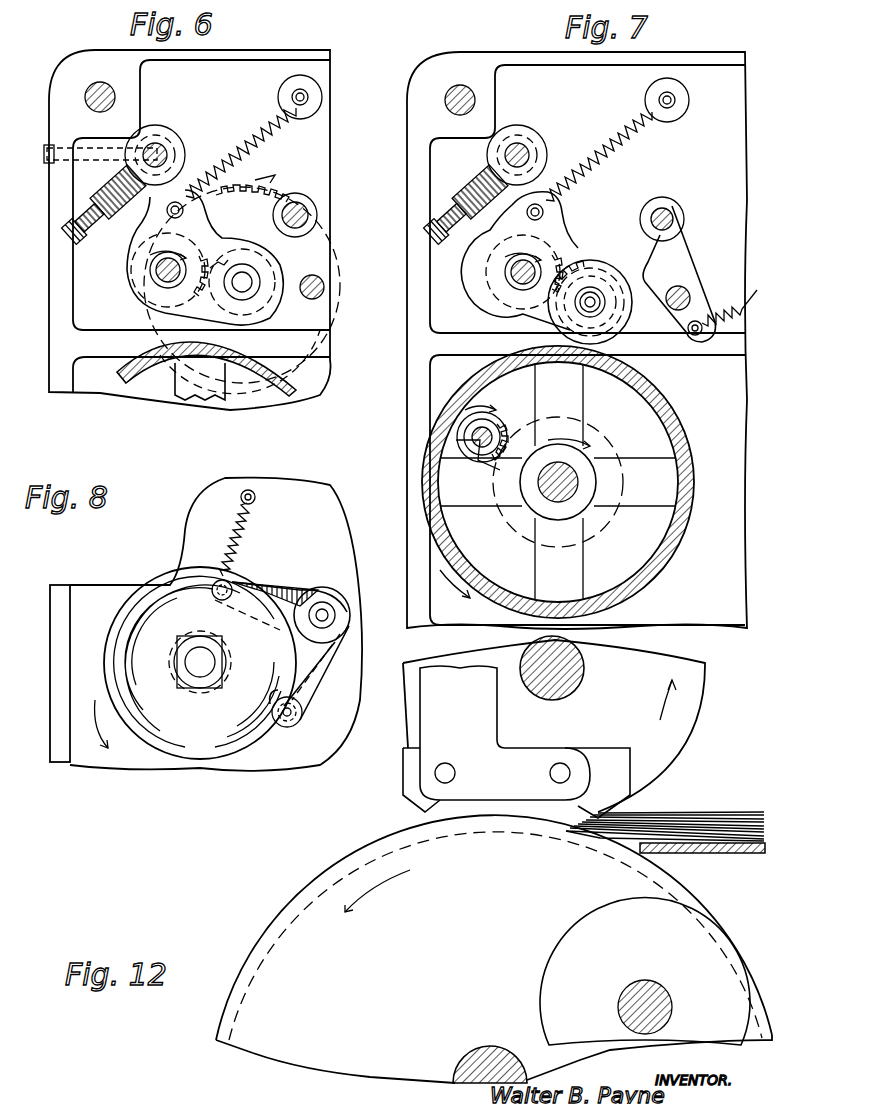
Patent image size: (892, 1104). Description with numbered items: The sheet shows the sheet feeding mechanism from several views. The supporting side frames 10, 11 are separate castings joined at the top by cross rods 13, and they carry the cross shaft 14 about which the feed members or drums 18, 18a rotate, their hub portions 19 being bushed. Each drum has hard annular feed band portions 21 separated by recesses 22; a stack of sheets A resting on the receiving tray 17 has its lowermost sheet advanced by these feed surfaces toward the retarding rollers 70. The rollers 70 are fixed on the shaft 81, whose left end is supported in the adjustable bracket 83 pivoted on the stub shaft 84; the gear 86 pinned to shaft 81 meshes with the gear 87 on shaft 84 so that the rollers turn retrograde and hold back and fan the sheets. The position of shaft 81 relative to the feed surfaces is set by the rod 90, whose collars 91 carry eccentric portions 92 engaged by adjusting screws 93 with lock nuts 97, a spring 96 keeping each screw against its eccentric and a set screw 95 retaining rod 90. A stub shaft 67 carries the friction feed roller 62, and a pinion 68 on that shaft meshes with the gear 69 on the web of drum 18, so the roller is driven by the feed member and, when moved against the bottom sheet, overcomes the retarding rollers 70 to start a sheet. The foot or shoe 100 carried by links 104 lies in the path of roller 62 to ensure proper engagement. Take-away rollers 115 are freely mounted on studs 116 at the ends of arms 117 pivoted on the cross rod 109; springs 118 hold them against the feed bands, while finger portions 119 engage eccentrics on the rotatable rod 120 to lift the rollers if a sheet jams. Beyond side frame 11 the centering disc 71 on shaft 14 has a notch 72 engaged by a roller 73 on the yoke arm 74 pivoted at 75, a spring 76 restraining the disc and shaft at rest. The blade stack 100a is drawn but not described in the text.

In FIG. 6, the supporting side frame 10 is at (320, 143).
In FIG. 7, the supporting side frame 10 is at (577, 340).
In FIG. 8, the supporting side frame 11 is at (206, 624).
In FIG. 6, the cross rod 13 is at (88, 92).
In FIG. 7, the cross rod 13 is at (452, 88).
In FIG. 7, the cross shaft 14 is at (576, 470).
In FIG. 8, the cross shaft 14 is at (200, 662).
In FIG. 12, the cross shaft 14 is at (490, 1056).
In FIG. 12, the receiving tray or supply hopper 17 is at (748, 856).
In FIG. 6, the feed member or drum 18 is at (268, 388).
In FIG. 7, the feed member or drum 18 is at (650, 584).
In FIG. 12, the feed member or drum 18a is at (316, 1060).
In FIG. 7, the hub portion 19 is at (580, 502).
In FIG. 6, the feed band portion 21 is at (292, 380).
In FIG. 6, the recess 22 is at (262, 375).
In FIG. 12, the friction feed roller 62 is at (645, 971).
In FIG. 7, the stub shaft 67 is at (500, 420).
In FIG. 12, the stub shaft 67 is at (672, 1002).
In FIG. 7, the pinion 68 is at (456, 446).
In FIG. 7, the gear 69 is at (588, 430).
In FIG. 12, the retarding roller 70 is at (705, 690).
In FIG. 8, the centering disc 71 is at (203, 759).
In FIG. 8, the notch 72 is at (270, 700).
In FIG. 8, the roller 73 is at (298, 722).
In FIG. 8, the yoke arm 74 is at (318, 685).
In FIG. 8, the pivot 75 is at (336, 613).
In FIG. 8, the spring 76 is at (246, 535).
In FIG. 6, the retarding roller shaft 81 is at (152, 276).
In FIG. 7, the retarding roller shaft 81 is at (510, 282).
In FIG. 12, the retarding roller shaft 81 is at (586, 672).
In FIG. 6, the adjustable bracket 83 is at (135, 232).
In FIG. 7, the adjustable bracket 83 is at (556, 230).
In FIG. 6, the stub shaft 84 is at (252, 280).
In FIG. 7, the stub shaft 84 is at (602, 268).
In FIG. 6, the gear 86 is at (203, 255).
In FIG. 7, the gear 86 is at (558, 256).
In FIG. 6, the gear 87 is at (218, 266).
In FIG. 7, the gear 87 is at (572, 268).
In FIG. 6, the rod 90 is at (170, 150).
In FIG. 7, the rod 90 is at (530, 150).
In FIG. 6, the collar 91 is at (147, 130).
In FIG. 7, the collar 91 is at (546, 160).
In FIG. 6, the eccentric portion 92 is at (162, 138).
In FIG. 7, the eccentric portion 92 is at (519, 140).
In FIG. 6, the adjusting screw 93 is at (70, 222).
In FIG. 7, the adjusting screw 93 is at (432, 224).
In FIG. 6, the set screw 95 is at (49, 147).
In FIG. 6, the spring 96 is at (262, 122).
In FIG. 7, the spring 96 is at (640, 132).
In FIG. 6, the lock nut 97 is at (92, 192).
In FIG. 7, the lock nut 97 is at (454, 193).
In FIG. 12, the foot or shoe 100 is at (628, 764).
In FIG. 12, the blades 100a is at (620, 796).
In FIG. 12, the link 104 is at (496, 739).
In FIG. 6, the cross rod 109 is at (326, 290).
In FIG. 7, the cross rod 109 is at (690, 293).
In FIG. 7, the take-away or pressure roller 115 is at (642, 360).
In FIG. 7, the stud 116 is at (600, 306).
In FIG. 7, the arm 117 is at (682, 262).
In FIG. 7, the spring 118 is at (746, 302).
In FIG. 7, the finger portion 119 is at (674, 214).
In FIG. 7, the rotatable rod 120 is at (660, 205).
In FIG. 12, the stack of sheets A is at (720, 832).